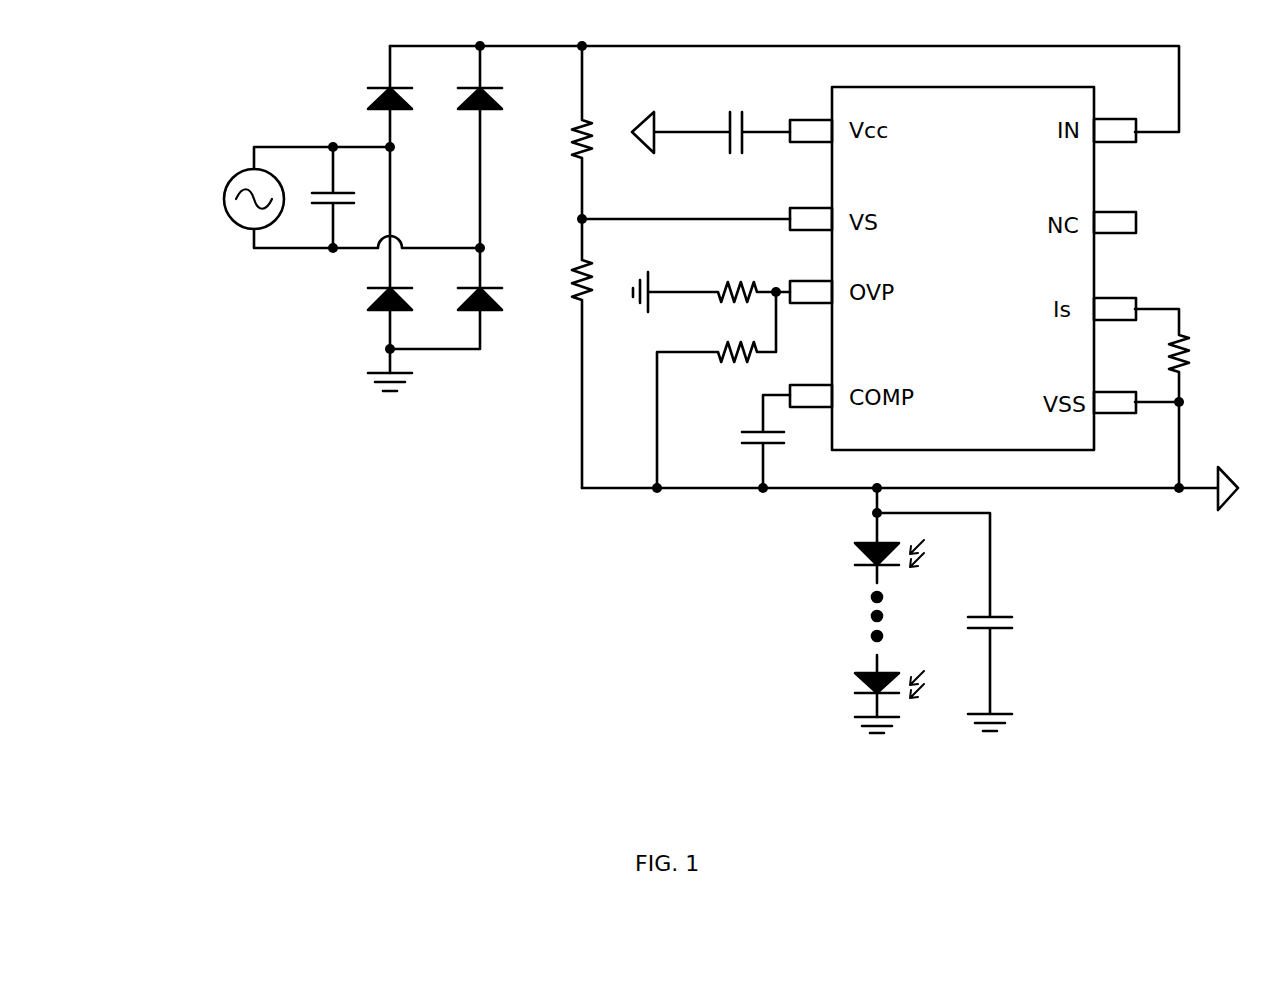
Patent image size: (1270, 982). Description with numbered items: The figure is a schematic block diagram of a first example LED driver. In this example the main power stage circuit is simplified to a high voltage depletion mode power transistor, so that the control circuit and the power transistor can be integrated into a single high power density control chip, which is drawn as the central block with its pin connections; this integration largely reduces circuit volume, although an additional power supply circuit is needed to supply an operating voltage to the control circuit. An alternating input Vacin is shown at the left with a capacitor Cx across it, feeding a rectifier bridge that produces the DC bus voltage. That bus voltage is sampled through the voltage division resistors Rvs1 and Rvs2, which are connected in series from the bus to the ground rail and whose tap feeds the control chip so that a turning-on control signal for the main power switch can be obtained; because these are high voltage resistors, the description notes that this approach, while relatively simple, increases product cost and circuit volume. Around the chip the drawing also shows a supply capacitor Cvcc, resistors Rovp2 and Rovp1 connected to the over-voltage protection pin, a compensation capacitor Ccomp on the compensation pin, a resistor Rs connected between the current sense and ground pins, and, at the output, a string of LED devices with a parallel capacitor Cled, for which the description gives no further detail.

The AC input voltage source Vacin is at (222, 199).
The input filter capacitor Cx is at (323, 197).
The voltage division resistor Rvs1 is at (555, 132).
The voltage division resistor Rvs2 is at (555, 353).
The Vcc supply capacitor Cvcc is at (711, 115).
The over-voltage protection resistor 2 Rovp2 is at (711, 279).
The over-voltage protection resistor 1 Rovp1 is at (716, 390).
The compensation capacitor Ccomp is at (736, 441).
The current sense resistor Rs is at (1162, 398).
The element LED is at (898, 610).
The LED output capacitor Cled is at (973, 622).